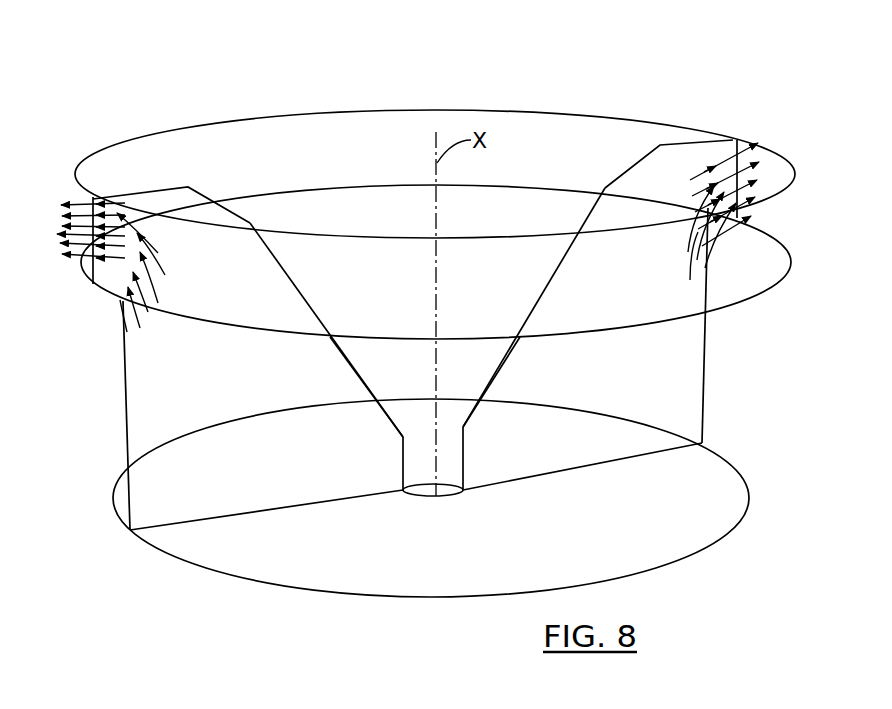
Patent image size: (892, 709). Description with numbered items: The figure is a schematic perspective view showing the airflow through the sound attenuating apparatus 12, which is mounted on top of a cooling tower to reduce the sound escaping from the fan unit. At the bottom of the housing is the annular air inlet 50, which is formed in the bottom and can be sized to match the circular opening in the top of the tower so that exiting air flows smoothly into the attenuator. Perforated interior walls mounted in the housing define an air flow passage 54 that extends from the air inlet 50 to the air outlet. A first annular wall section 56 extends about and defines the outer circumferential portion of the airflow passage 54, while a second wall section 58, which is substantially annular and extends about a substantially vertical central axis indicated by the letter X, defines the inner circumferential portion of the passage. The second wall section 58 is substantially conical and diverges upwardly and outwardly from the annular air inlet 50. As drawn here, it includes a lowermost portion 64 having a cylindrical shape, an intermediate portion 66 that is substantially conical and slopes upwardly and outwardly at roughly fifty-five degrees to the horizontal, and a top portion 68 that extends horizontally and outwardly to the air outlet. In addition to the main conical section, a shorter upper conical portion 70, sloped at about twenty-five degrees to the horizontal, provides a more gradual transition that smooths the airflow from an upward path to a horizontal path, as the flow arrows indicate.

The sound attenuating apparatus 12 is at (581, 86).
The annular air inlet 50 is at (660, 543).
The air flow passage 54 is at (688, 380).
The first annular wall section 56 is at (707, 340).
The second wall section 58 is at (560, 266).
The lowermost portion 64 is at (464, 453).
The intermediate portion 66 is at (527, 323).
The top portion 68 is at (676, 139).
The upper conical portion 70 is at (625, 176).